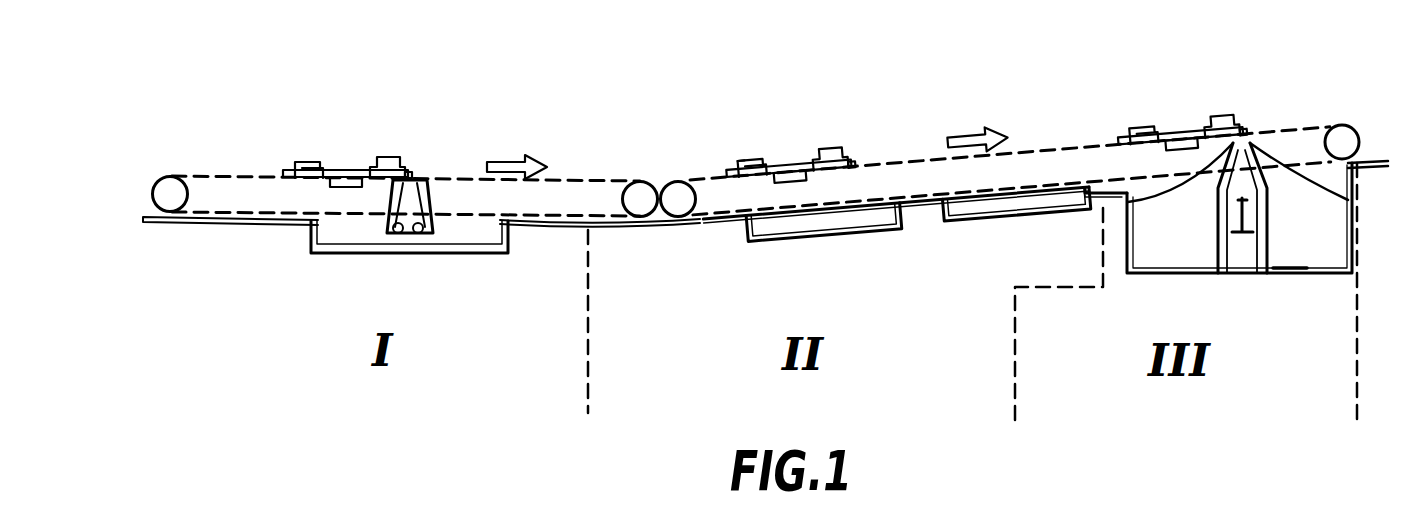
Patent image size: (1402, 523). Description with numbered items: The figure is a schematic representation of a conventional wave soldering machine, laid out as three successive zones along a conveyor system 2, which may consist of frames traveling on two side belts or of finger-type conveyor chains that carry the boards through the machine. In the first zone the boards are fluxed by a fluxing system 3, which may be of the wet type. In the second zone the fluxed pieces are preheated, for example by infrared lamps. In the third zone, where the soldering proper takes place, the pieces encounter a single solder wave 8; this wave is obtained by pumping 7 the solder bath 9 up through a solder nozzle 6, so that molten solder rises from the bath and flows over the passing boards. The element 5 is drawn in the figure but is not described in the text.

The conveyor system 2 is at (180, 157).
The fluxing system 3 is at (447, 202).
The collecting box 5 is at (1295, 281).
The solder nozzle 6 is at (1272, 220).
The pumping 7 is at (1233, 217).
The solder wave 8 is at (1276, 150).
The solder bath 9 is at (1290, 250).